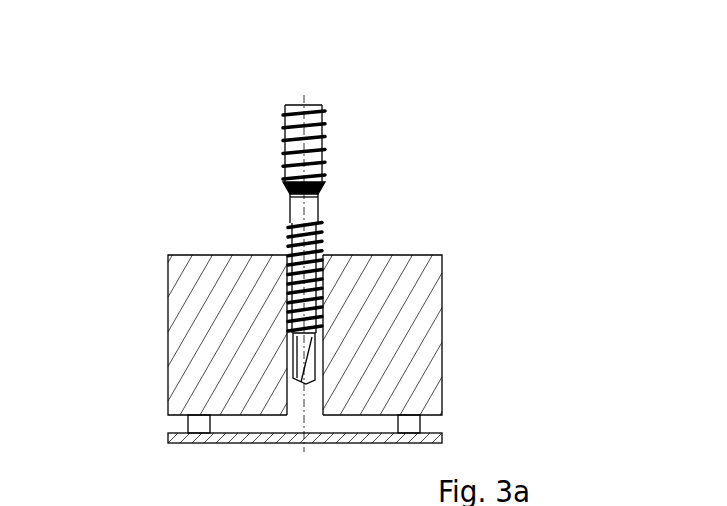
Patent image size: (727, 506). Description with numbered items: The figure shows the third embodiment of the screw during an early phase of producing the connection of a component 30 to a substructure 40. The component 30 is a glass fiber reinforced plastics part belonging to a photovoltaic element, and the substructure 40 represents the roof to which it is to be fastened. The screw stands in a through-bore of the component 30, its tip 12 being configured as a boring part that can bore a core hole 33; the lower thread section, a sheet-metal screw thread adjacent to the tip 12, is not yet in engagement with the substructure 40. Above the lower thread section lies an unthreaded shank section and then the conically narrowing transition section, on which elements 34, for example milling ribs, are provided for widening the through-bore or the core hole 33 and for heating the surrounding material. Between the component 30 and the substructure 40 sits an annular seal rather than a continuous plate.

The elements for widening a through-bore or heating surrounding material 34 is at (323, 183).
The tip 12 is at (292, 360).
The component 30 is at (405, 357).
The core hole 33 is at (190, 414).
The substructure 40 is at (442, 438).